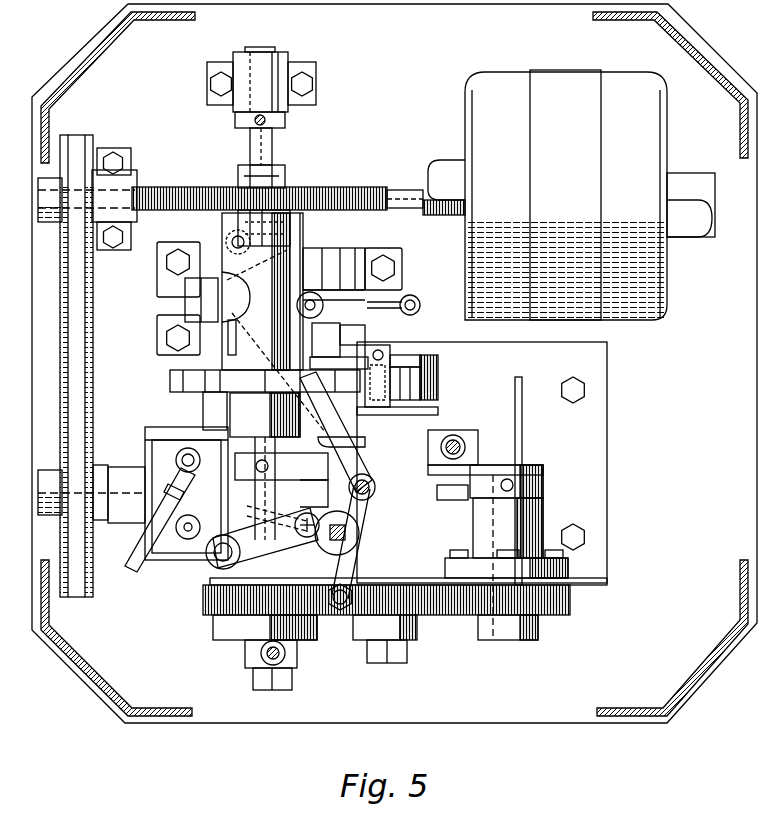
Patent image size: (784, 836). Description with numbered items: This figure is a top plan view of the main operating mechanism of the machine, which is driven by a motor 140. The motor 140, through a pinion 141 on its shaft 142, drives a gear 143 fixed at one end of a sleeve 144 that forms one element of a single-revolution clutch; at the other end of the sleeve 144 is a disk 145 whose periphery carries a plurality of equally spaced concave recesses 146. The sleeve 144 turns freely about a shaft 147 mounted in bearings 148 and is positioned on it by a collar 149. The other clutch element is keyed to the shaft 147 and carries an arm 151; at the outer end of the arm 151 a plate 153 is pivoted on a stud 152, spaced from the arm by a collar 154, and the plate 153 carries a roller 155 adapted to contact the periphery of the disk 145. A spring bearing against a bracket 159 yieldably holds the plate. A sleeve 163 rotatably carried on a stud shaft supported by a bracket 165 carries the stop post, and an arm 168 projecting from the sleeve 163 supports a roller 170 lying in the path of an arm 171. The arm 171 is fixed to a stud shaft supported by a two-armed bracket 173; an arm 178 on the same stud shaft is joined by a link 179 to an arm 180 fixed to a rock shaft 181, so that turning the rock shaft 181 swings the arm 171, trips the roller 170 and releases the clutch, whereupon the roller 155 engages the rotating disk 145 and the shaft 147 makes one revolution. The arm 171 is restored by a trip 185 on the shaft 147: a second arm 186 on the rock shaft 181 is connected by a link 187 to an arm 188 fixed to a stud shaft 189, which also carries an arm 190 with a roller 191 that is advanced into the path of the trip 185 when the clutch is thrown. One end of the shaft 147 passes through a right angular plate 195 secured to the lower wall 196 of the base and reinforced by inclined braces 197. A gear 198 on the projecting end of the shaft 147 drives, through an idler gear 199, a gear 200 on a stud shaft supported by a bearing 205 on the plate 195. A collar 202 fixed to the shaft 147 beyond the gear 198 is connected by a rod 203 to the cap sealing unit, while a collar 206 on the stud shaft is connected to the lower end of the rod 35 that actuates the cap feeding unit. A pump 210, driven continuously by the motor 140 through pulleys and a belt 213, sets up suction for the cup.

The rod 35 is at (460, 447).
The motor 140 is at (571, 195).
The pinion 141 is at (238, 168).
The shaft 142 is at (428, 192).
The gear 143 is at (292, 192).
The sleeve 144 is at (262, 250).
The disk 145 is at (190, 393).
The concave recesses 146 is at (178, 377).
The shaft 147 is at (250, 132).
The bearings 148 is at (270, 64).
The collar 149 is at (282, 168).
The arm 151 is at (330, 442).
The stud 152 is at (435, 402).
The plate 153 is at (415, 363).
The collar 154 is at (437, 383).
The roller 155 is at (437, 376).
The bracket 159 is at (277, 398).
The sleeve 163 is at (366, 300).
The bracket 165 is at (322, 200).
The arm 168 is at (372, 258).
The roller 170 is at (333, 300).
The arm 171 is at (185, 298).
The two-armed bracket 173 is at (163, 325).
The arm 178 is at (217, 283).
The link 179 is at (345, 452).
The arm 180 is at (373, 490).
The rock shaft 181 is at (350, 532).
The trip 185 is at (281, 488).
The second arm 186 is at (347, 625).
The link 187 is at (308, 625).
The arm 188 is at (215, 592).
The stud shaft 189 is at (210, 555).
The arm 190 is at (240, 510).
The roller 191 is at (358, 520).
The right angular plate 195 is at (590, 583).
The lower wall 196 is at (394, 363).
The inclined braces 197 is at (537, 430).
The gear 198 is at (240, 605).
The idler gear 199 is at (420, 612).
The gear 200 is at (552, 607).
The collar 202 is at (262, 638).
The rod 203 is at (265, 656).
The bearing 205 is at (535, 525).
The collar 206 is at (563, 466).
The pump 210 is at (160, 458).
The belt 213 is at (163, 300).